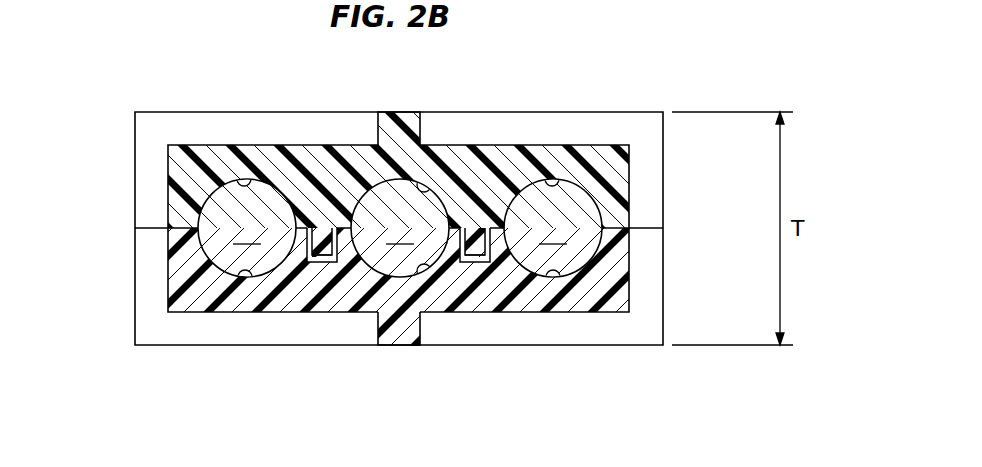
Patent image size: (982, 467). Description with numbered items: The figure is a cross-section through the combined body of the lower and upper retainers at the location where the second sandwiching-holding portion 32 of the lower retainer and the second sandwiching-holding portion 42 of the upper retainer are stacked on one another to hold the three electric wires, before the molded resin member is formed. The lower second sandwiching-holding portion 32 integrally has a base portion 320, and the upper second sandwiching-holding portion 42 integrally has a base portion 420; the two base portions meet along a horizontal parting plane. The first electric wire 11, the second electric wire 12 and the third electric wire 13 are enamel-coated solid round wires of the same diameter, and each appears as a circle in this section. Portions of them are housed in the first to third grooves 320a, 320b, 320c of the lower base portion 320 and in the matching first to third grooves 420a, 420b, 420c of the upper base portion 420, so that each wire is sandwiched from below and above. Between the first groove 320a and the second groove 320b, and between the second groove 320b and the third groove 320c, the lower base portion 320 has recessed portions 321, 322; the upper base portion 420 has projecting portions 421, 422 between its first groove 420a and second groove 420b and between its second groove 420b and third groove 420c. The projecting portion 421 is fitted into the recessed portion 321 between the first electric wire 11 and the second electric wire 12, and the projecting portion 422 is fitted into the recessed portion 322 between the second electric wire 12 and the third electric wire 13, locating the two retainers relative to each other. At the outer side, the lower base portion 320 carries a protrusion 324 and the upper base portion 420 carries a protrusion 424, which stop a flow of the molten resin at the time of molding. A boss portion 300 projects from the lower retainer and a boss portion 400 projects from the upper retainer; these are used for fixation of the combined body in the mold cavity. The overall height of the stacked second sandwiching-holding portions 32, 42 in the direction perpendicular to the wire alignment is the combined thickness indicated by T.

The second sandwiching-holding portion 42 is at (125, 184).
The second sandwiching-holding portion 32 is at (125, 272).
The base portion 420 is at (618, 172).
The base portion 320 is at (618, 288).
The boss portion 400 is at (394, 132).
The boss portion 300 is at (397, 332).
The protrusion 424 is at (652, 203).
The protrusion 324 is at (652, 253).
The first electric wire 11 is at (504, 225).
The second electric wire 12 is at (348, 225).
The third electric wire 13 is at (195, 225).
The first groove 420a is at (553, 182).
The second groove 420b is at (425, 188).
The third groove 420c is at (252, 184).
The first groove 320a is at (560, 276).
The second groove 320b is at (425, 269).
The third groove 320c is at (249, 276).
The projecting portion 421 is at (477, 238).
The projecting portion 422 is at (320, 240).
The recessed portion 321 is at (486, 263).
The recessed portion 322 is at (332, 263).